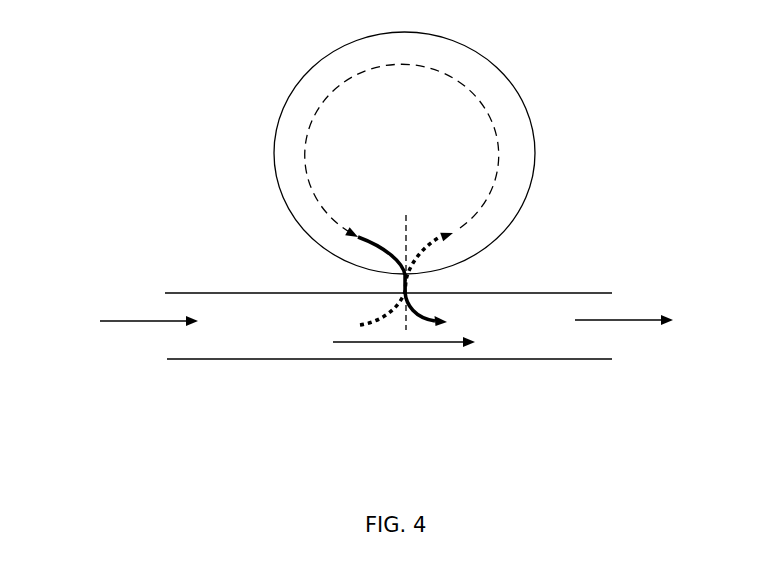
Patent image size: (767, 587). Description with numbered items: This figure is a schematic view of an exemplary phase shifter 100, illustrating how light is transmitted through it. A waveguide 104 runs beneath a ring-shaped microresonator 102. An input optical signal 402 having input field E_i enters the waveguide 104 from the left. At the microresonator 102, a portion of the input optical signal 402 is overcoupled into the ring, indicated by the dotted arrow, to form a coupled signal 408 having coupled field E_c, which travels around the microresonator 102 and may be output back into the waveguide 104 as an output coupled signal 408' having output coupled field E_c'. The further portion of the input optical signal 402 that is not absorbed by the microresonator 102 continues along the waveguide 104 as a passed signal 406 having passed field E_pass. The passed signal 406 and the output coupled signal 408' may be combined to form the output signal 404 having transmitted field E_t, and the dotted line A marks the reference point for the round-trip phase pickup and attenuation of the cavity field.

The phase shifter 100 is at (155, 131).
The microresonator 102 is at (560, 104).
The waveguide 104 is at (243, 357).
The input optical signal 402 is at (122, 322).
The output signal 404 is at (635, 321).
The passed signal 406 is at (385, 337).
The coupled signal 408 is at (457, 150).
The output coupled signal 408' is at (441, 262).